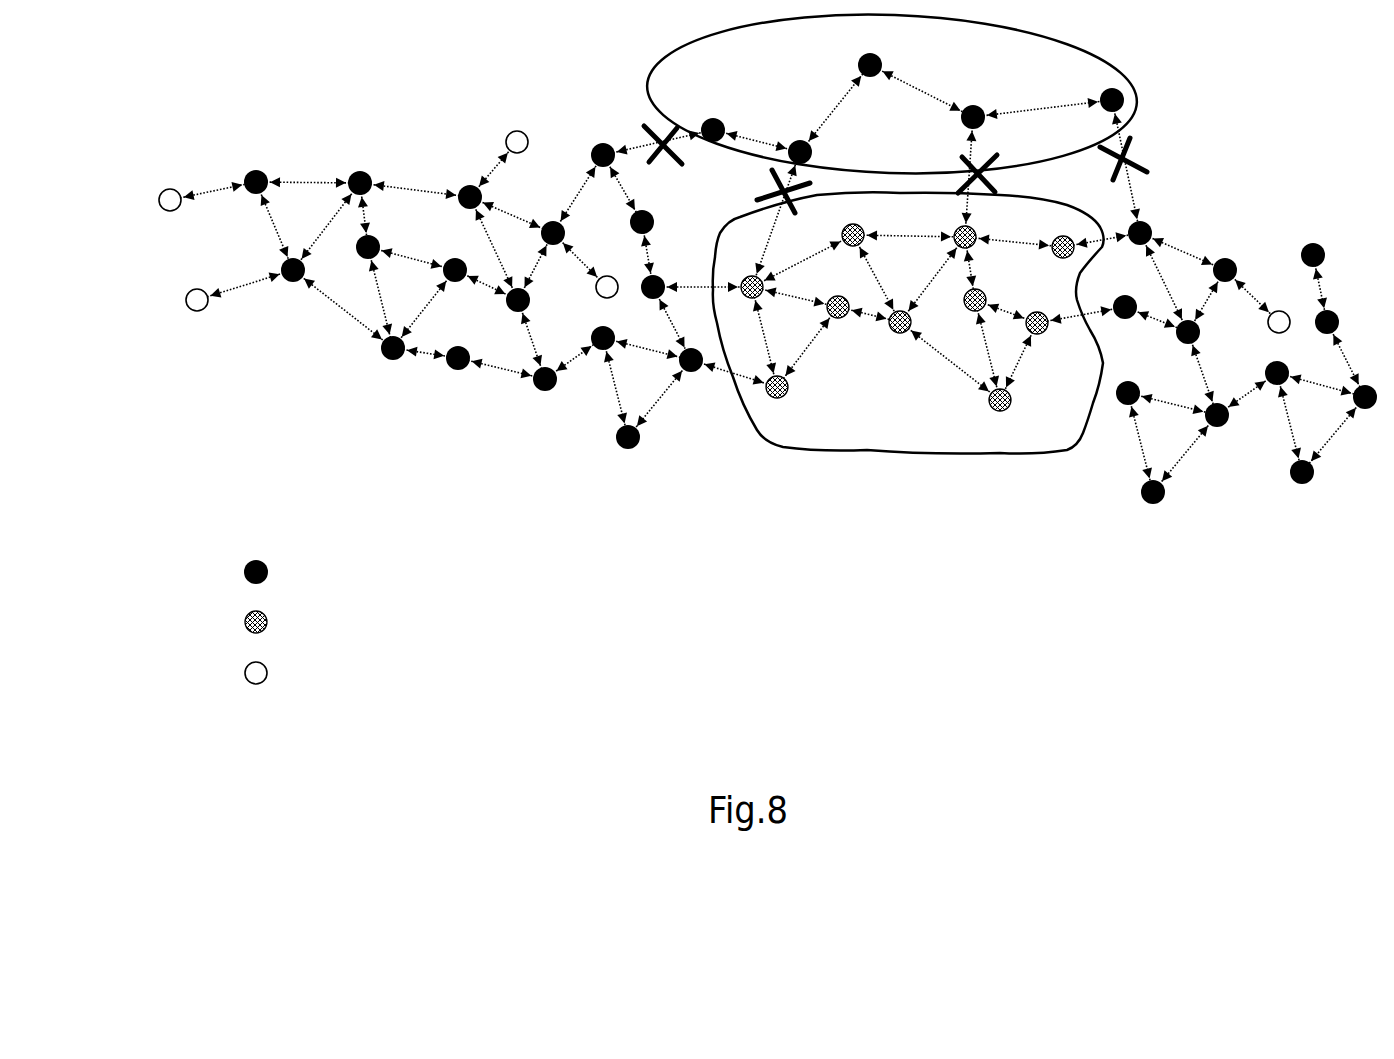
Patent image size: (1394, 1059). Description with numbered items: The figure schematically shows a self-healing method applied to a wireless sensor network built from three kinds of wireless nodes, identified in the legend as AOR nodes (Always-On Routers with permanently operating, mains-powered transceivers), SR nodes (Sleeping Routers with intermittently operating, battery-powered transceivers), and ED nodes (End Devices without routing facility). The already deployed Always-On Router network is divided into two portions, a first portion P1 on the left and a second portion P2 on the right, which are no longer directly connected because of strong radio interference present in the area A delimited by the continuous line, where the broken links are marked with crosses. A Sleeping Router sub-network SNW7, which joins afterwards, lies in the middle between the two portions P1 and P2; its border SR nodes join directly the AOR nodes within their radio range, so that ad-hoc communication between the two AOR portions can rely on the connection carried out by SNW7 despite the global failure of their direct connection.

The portion of the AOR sub-network P1 is at (470, 415).
The portion of the AOR sub-network P2 is at (1227, 478).
The area A is at (892, 146).
The SR sub-network SNW7 is at (926, 322).
The Always-On Router node AOR is at (305, 570).
The Sleeping Router node SR is at (292, 620).
The End Device node ED is at (292, 672).